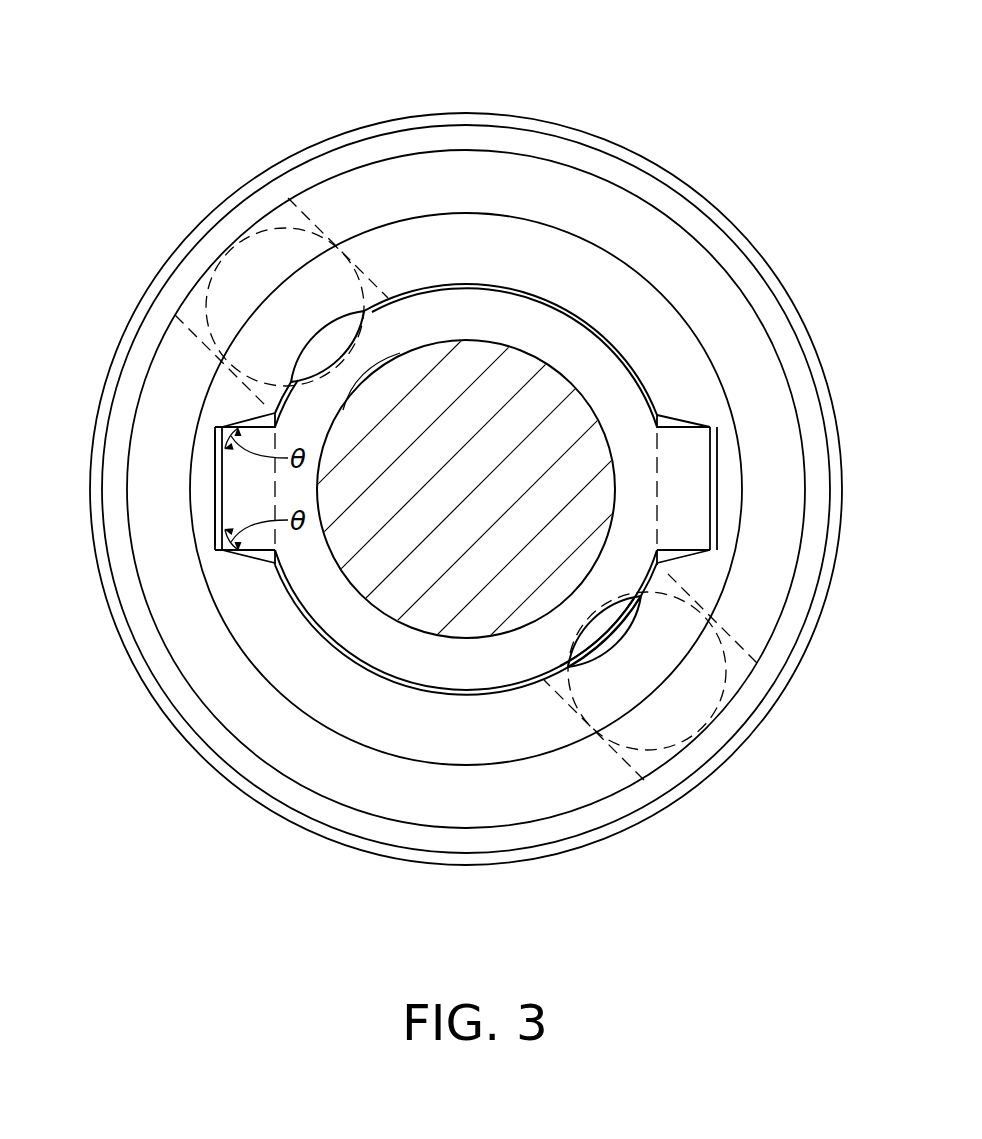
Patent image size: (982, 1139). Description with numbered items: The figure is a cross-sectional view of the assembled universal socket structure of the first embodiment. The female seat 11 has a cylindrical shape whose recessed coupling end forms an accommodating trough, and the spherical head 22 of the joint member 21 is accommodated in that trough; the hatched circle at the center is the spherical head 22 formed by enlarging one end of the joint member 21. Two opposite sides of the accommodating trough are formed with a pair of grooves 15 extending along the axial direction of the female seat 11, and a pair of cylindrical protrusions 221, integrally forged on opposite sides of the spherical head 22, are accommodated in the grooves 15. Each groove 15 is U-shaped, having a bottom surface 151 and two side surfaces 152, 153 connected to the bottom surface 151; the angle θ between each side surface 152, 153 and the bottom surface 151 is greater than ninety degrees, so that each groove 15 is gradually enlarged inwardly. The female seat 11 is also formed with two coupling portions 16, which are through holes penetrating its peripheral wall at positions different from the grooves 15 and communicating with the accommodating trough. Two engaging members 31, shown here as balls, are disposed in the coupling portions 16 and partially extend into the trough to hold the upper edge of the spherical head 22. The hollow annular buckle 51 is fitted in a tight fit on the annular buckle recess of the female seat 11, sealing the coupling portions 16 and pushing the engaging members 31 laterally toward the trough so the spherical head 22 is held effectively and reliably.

The female seat 11 is at (745, 752).
The annular buckle 51 is at (342, 157).
The joint member 21 is at (566, 368).
The spherical head 22 is at (528, 318).
The engaging members 31 is at (335, 343).
The grooves 15 is at (221, 468).
The bottom surface 151 is at (230, 508).
The side surface 152 is at (262, 420).
The side surface 153 is at (260, 547).
The protrusions 221 is at (228, 486).
The coupling portions 16 is at (225, 272).